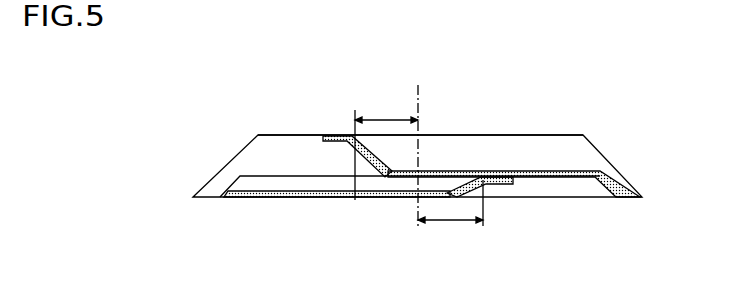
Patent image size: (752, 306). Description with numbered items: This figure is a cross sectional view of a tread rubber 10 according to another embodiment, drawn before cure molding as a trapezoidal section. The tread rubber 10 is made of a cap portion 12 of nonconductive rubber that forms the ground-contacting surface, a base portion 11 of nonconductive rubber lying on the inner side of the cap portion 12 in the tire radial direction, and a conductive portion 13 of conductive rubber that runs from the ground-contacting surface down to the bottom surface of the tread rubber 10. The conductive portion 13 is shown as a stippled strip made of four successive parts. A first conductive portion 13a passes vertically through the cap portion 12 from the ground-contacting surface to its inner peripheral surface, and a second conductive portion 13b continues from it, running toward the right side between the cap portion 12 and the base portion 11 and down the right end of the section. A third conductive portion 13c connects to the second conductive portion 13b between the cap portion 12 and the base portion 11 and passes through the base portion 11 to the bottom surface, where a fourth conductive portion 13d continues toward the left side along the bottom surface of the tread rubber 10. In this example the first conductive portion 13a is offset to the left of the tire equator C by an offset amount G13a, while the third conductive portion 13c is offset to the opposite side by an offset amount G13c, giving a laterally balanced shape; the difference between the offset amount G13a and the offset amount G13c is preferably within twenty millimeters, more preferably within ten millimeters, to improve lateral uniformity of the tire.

The tread rubber 10 is at (285, 135).
The base portion 11 is at (238, 180).
The cap portion 12 is at (255, 157).
The conductive portion 13 is at (444, 167).
The first conductive portion 13a is at (366, 162).
The second conductive portion 13b is at (562, 172).
The third conductive portion 13c is at (463, 178).
The fourth conductive portion 13d is at (273, 198).
The tire equator C is at (421, 140).
The offset amount of the first conductive portion G13a is at (380, 143).
The offset amount of the third conductive portion G13c is at (448, 218).